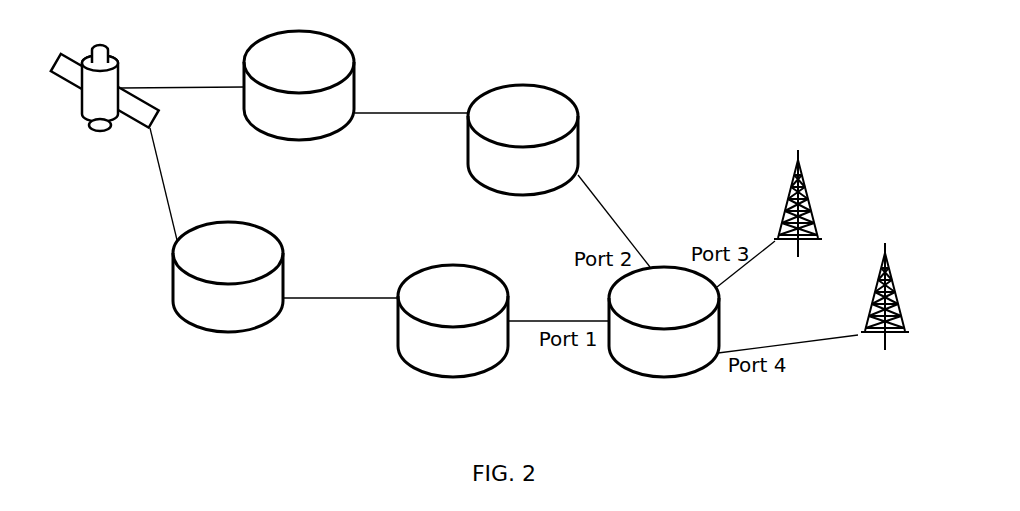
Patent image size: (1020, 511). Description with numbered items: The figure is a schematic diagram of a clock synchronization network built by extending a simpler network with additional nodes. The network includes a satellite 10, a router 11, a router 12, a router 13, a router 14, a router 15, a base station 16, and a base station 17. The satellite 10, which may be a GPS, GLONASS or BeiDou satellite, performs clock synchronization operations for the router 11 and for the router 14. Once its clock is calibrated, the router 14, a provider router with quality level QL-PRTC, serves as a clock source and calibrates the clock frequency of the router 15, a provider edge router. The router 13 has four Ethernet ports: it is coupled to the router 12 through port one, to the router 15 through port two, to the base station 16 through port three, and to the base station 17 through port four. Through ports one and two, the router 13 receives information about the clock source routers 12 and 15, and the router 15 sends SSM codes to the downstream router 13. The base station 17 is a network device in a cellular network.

The satellite 10 is at (105, 119).
The router 11 is at (228, 294).
The router 12 is at (453, 338).
The router 13 is at (664, 338).
The router 14 is at (299, 103).
The router 15 is at (523, 158).
The base station 16 is at (812, 233).
The base station 17 is at (884, 329).